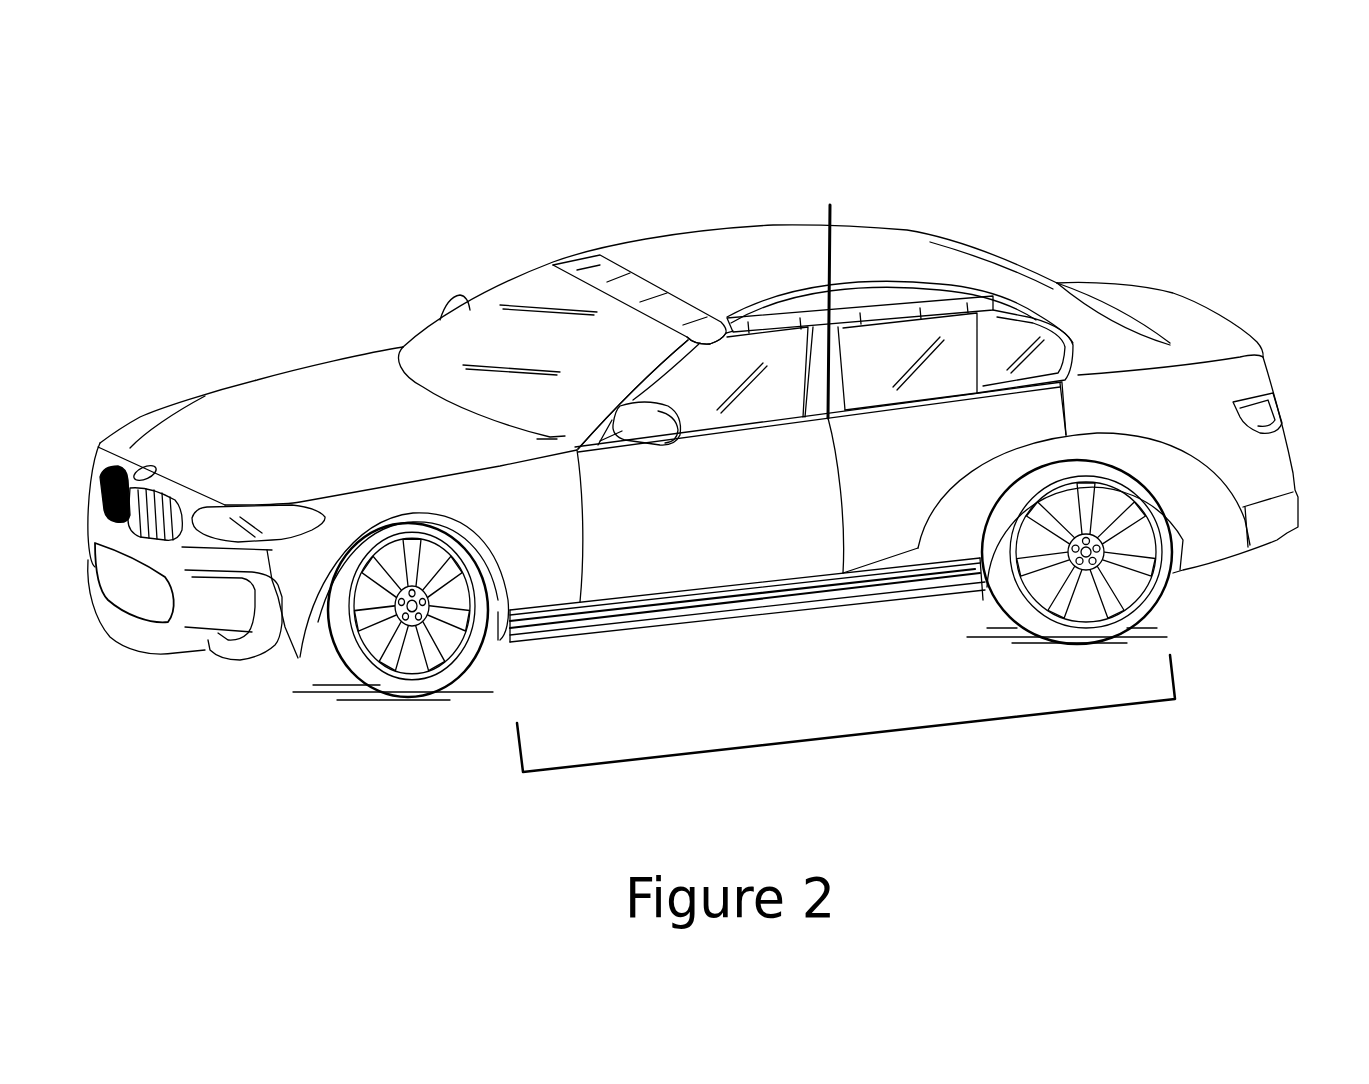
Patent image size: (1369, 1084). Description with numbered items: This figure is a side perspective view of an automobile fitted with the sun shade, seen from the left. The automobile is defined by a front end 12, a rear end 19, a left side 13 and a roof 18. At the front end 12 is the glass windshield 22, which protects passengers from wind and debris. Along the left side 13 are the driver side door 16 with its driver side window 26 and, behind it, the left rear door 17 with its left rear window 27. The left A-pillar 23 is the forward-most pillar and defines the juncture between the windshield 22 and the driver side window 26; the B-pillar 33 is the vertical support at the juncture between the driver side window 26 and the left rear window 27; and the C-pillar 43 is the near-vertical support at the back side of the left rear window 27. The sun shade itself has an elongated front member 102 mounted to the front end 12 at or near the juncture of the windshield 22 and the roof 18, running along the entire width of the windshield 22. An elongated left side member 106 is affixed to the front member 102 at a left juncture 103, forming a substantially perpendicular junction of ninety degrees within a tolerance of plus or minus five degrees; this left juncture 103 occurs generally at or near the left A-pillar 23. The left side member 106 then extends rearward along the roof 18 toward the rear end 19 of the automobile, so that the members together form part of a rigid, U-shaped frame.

The front end 12 is at (125, 552).
The left side 13 is at (867, 737).
The driver side door 16 is at (695, 522).
The left rear door 17 is at (882, 530).
The roof 18 is at (707, 252).
The rear end 19 is at (1243, 320).
The windshield 22 is at (460, 355).
The left A-pillar 23 is at (622, 392).
The driver side window 26 is at (723, 405).
The left rear window 27 is at (885, 377).
The B-pillar 33 is at (817, 378).
The C-pillar 43 is at (1035, 318).
The front member 102 is at (602, 270).
The left juncture 103 is at (722, 335).
The left side member 106 is at (886, 313).